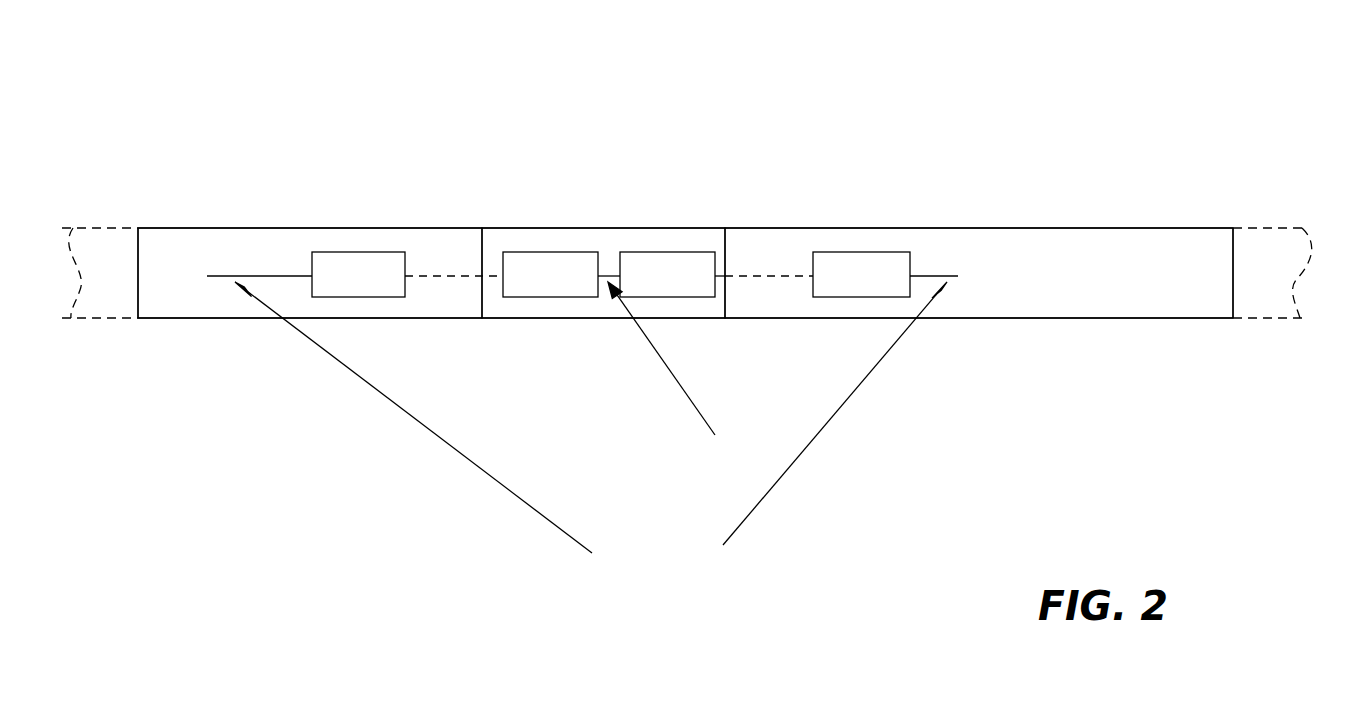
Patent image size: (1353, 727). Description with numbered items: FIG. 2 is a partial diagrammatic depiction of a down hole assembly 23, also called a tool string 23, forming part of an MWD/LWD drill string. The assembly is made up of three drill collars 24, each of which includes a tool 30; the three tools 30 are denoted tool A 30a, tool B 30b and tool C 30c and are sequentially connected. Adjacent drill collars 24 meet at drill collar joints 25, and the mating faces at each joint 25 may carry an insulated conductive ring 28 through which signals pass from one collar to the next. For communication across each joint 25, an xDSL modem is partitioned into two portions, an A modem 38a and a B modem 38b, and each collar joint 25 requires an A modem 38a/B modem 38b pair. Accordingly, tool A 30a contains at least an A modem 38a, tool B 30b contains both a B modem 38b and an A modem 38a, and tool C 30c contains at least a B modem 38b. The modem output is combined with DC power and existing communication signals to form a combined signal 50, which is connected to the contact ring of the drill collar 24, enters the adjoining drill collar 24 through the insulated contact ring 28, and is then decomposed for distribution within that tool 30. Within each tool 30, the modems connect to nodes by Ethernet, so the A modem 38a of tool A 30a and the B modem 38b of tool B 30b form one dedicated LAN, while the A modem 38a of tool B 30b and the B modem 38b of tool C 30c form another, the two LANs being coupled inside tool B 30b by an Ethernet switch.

The down hole assembly 23 is at (1111, 98).
The drill collar 24 is at (687, 318).
The drill collar joint 25 is at (1217, 226).
The conductive ring 28 is at (685, 171).
The tool 30 is at (603, 323).
The tool A 30a is at (307, 318).
The tool B 30b is at (603, 323).
The tool C 30c is at (979, 318).
The A modem 38a is at (528, 330).
The B modem 38b is at (692, 323).
The combined signal 50 is at (762, 295).